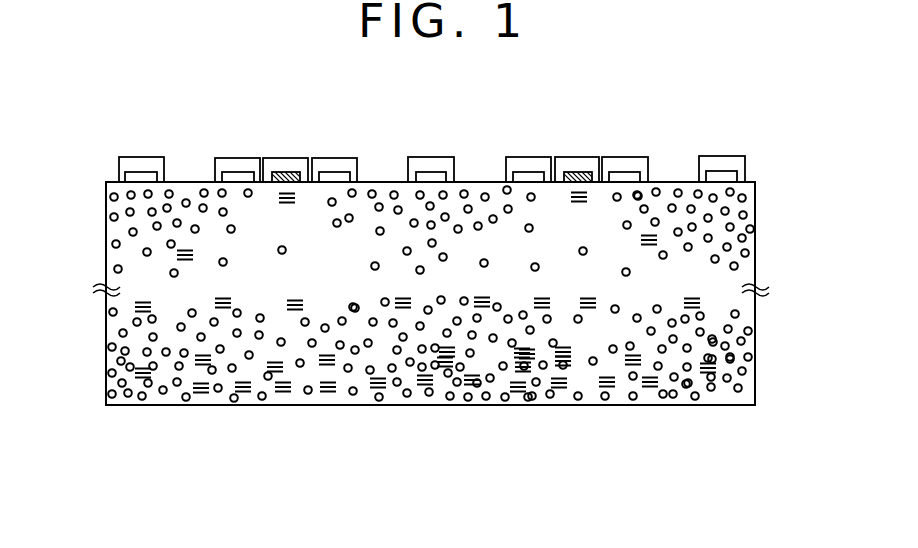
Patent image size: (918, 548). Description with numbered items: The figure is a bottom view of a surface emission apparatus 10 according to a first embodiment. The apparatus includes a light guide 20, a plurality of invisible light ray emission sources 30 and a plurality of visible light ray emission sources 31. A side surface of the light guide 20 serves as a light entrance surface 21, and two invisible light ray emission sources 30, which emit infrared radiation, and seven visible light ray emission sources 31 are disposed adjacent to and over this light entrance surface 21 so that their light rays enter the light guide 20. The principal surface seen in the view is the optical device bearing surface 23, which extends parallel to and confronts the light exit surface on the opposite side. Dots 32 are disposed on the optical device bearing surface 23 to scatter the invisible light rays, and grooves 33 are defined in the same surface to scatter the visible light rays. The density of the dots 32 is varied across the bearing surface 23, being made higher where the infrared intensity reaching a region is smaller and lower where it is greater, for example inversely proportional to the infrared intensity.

The surface emission apparatus 10 is at (482, 482).
The light guide 20 is at (766, 334).
The light entrance surface 21 is at (749, 181).
The optical device bearing surface 23 is at (118, 326).
The invisible light ray emission source 30 is at (575, 157).
The visible light ray emission source 31 is at (720, 156).
The dot 32 is at (753, 229).
The groove 33 is at (651, 386).